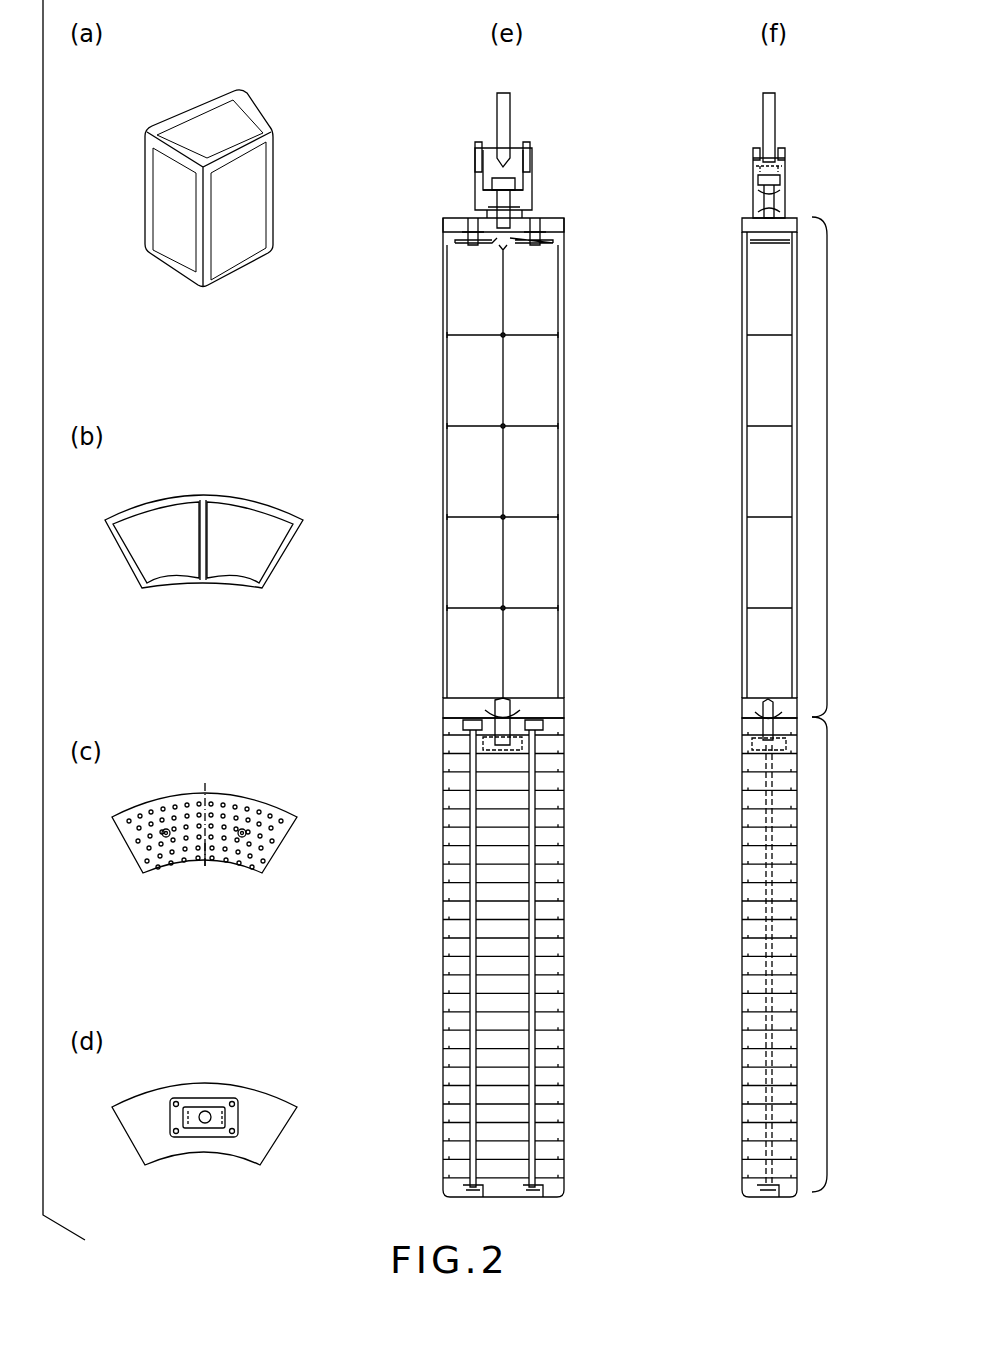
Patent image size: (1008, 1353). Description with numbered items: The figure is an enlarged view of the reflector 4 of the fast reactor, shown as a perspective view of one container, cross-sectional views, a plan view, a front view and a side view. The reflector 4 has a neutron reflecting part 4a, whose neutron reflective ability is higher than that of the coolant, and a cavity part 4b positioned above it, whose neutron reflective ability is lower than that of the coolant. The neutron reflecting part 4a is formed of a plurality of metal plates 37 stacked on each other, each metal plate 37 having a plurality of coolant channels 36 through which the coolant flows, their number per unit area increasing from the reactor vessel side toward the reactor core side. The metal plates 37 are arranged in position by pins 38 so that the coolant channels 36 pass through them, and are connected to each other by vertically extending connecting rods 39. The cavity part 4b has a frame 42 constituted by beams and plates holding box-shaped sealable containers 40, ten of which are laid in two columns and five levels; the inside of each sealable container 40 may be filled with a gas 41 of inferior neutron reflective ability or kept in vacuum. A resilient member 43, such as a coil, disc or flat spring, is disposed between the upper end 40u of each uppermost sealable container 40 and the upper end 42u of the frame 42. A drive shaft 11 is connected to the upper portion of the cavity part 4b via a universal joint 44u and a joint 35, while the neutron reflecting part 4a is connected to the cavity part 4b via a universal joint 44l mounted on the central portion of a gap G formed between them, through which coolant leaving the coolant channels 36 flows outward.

The reflector 4 is at (264, 1074).
The neutron reflecting part 4a is at (436, 775).
The cavity part 4b is at (435, 366).
The drive shaft 11 is at (497, 115).
The joint 35 is at (515, 142).
The coolant channels 36 is at (205, 842).
The metal plates 37 is at (178, 793).
The pins 38 is at (265, 838).
The connecting rods 39 is at (243, 830).
The sealable containers 40 is at (207, 120).
The upper end of sealable container 40u is at (452, 237).
The gas 41 is at (283, 538).
The frame 42 is at (205, 500).
The upper end of frame 42u is at (457, 222).
The resilient member 43 is at (540, 228).
The universal joint 44u is at (508, 202).
The universal joint 44l is at (508, 728).
The gap G is at (443, 718).